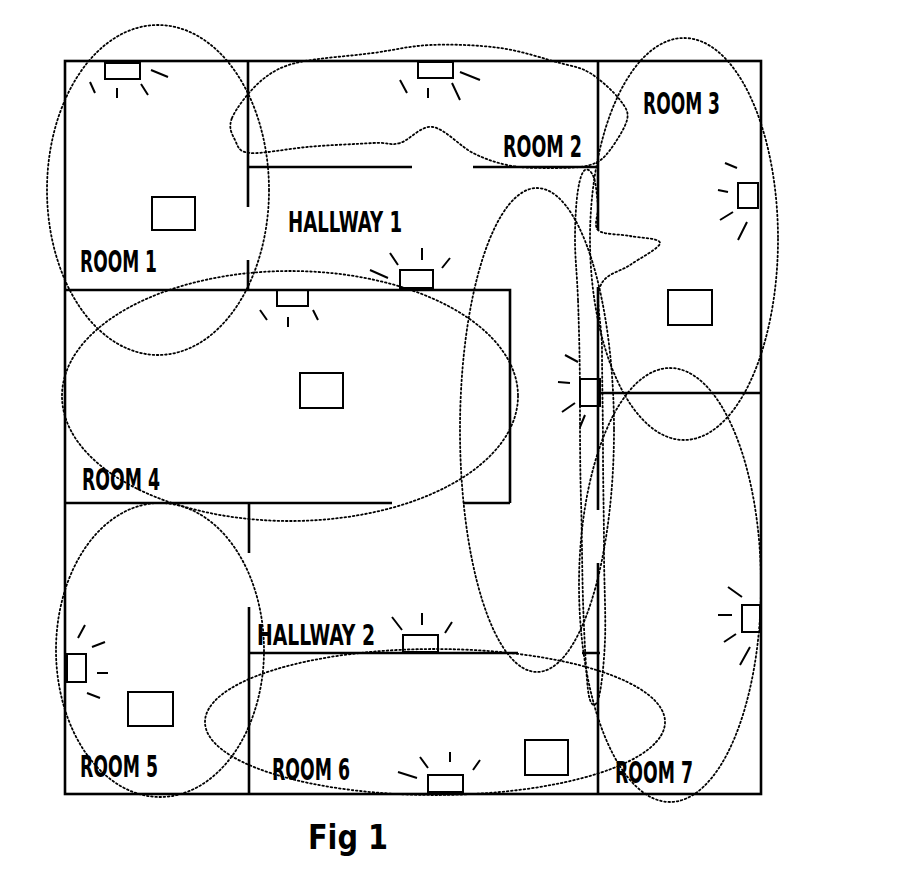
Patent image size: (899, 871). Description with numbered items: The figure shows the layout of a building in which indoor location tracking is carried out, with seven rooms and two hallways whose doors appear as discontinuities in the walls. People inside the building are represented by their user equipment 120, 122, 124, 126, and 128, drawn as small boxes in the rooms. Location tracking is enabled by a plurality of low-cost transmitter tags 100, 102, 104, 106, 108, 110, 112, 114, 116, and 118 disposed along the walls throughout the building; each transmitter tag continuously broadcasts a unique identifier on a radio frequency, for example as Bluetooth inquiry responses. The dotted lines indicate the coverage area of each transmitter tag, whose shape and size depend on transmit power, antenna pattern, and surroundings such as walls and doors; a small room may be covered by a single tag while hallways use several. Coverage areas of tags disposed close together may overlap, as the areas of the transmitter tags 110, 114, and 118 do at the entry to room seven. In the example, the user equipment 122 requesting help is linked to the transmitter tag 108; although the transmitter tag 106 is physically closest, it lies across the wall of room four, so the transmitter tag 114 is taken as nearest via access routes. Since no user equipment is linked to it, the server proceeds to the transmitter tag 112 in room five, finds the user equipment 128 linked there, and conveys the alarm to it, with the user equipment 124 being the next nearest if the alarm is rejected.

The transmitter tag 100 is at (127, 69).
The transmitter tag 102 is at (445, 71).
The transmitter tag 104 is at (745, 196).
The transmitter tag 106 is at (422, 281).
The transmitter tag 108 is at (288, 292).
The transmitter tag 110 is at (590, 390).
The transmitter tag 112 is at (67, 656).
The transmitter tag 114 is at (420, 645).
The transmitter tag 116 is at (445, 786).
The transmitter tag 118 is at (752, 616).
The user equipment 120 is at (176, 196).
The user equipment 122 is at (322, 373).
The user equipment 124 is at (548, 740).
The user equipment 126 is at (696, 290).
The user equipment 128 is at (157, 692).